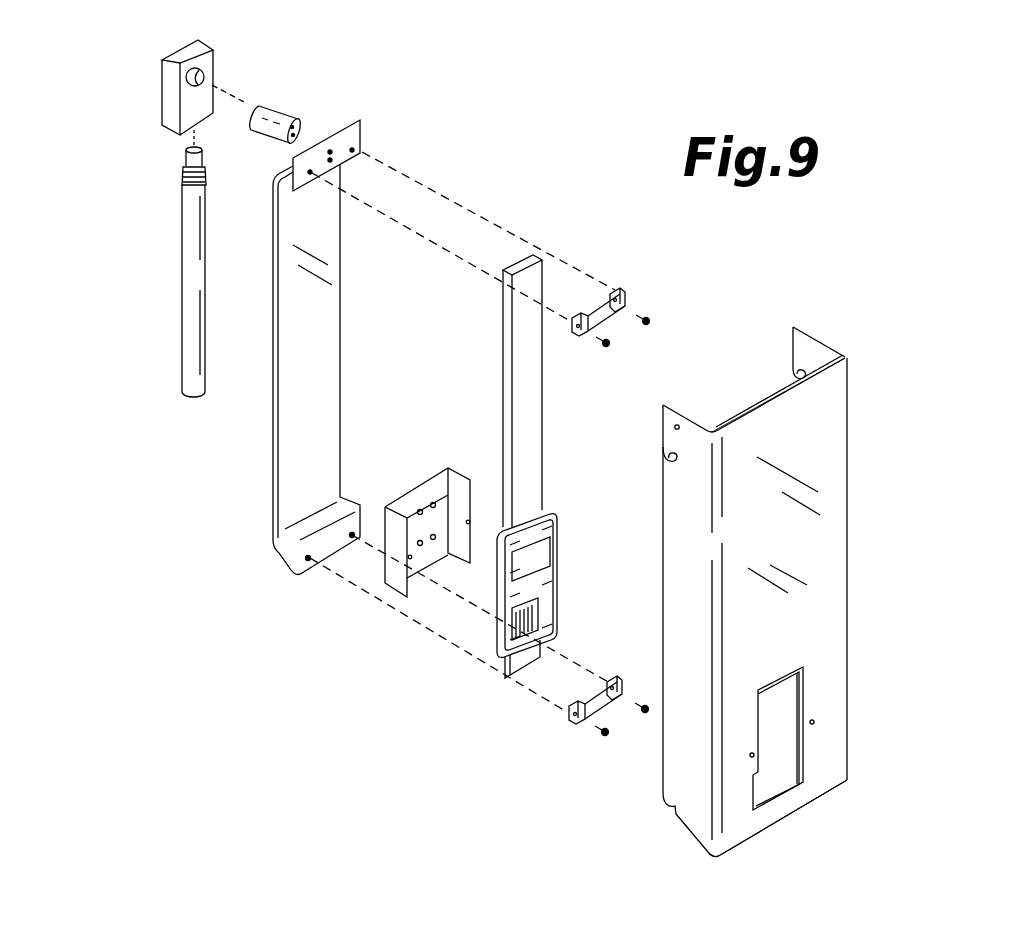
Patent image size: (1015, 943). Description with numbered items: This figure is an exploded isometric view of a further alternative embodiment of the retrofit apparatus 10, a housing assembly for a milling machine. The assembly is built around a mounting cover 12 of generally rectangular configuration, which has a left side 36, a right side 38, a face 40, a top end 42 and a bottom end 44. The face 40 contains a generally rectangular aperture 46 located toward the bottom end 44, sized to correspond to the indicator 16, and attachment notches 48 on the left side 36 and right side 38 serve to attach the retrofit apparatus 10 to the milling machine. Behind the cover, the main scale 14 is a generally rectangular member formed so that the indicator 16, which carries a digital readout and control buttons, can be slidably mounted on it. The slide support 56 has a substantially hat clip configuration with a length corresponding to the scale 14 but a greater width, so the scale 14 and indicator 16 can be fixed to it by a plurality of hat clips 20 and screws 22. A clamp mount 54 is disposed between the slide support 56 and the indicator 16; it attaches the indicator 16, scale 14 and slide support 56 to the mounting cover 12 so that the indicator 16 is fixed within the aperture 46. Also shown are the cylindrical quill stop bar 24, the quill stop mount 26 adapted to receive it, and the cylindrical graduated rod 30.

The retrofit apparatus 10 is at (865, 236).
The mounting cover 12 is at (782, 568).
The main scale 14 is at (542, 403).
The indicator 16 is at (557, 517).
The hat clips 20 is at (573, 718).
The screws 22 is at (603, 738).
The cylindrical quill stop bar 24 is at (280, 105).
The quill stop mount 26 is at (167, 90).
The cylindrical graduated rod 30 is at (187, 272).
The left side 36 is at (683, 817).
The right side 38 is at (805, 347).
The face 40 is at (830, 462).
The top end 42 is at (750, 407).
The bottom end 44 is at (787, 813).
The aperture 46 is at (785, 753).
The attachment notches 48 is at (797, 370).
The clamp mount 54 is at (412, 483).
The slide support 56 is at (342, 342).